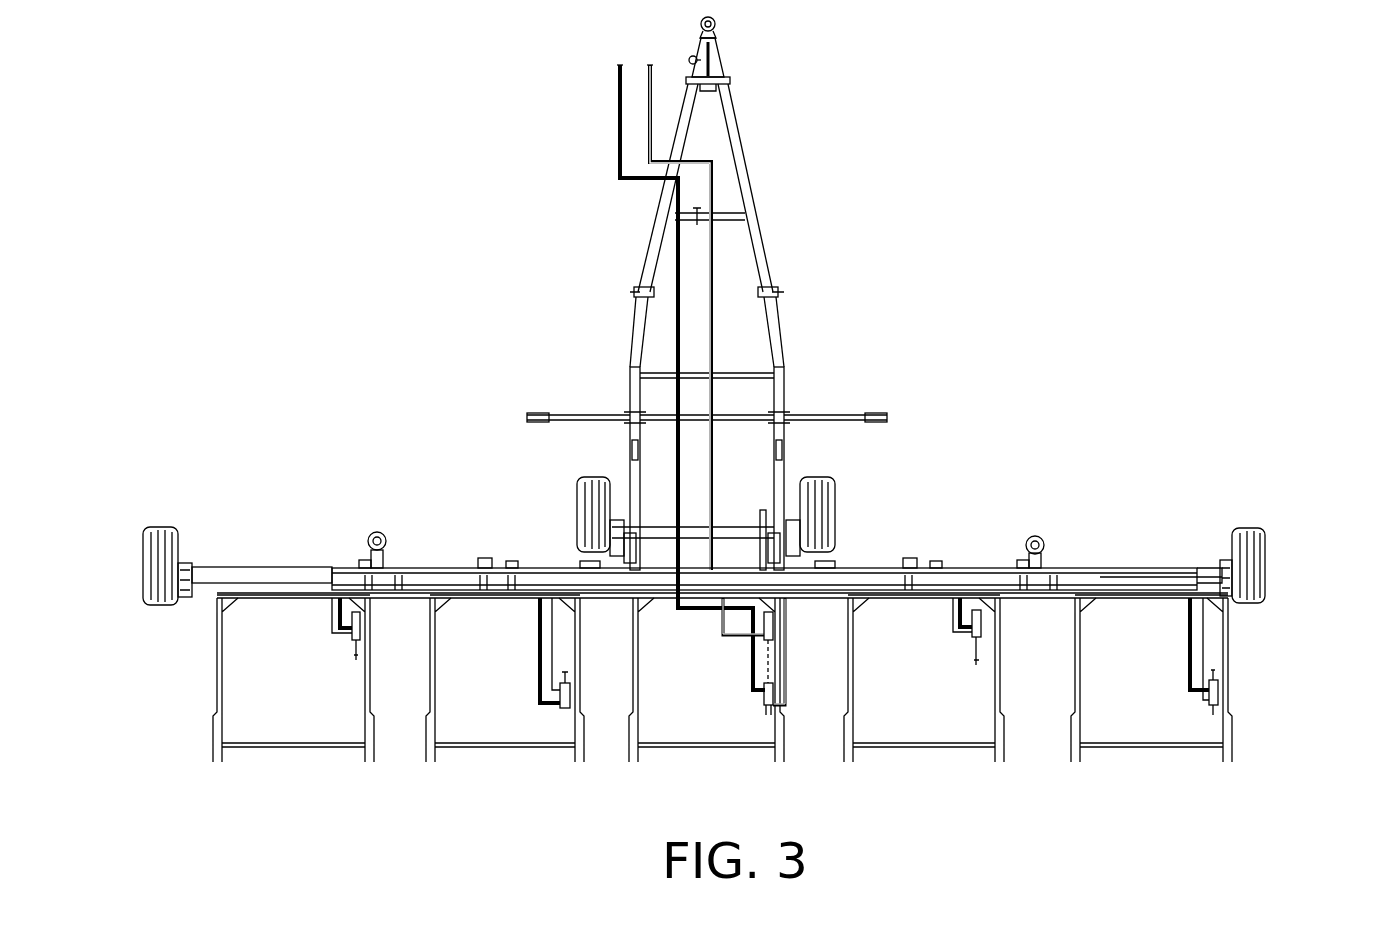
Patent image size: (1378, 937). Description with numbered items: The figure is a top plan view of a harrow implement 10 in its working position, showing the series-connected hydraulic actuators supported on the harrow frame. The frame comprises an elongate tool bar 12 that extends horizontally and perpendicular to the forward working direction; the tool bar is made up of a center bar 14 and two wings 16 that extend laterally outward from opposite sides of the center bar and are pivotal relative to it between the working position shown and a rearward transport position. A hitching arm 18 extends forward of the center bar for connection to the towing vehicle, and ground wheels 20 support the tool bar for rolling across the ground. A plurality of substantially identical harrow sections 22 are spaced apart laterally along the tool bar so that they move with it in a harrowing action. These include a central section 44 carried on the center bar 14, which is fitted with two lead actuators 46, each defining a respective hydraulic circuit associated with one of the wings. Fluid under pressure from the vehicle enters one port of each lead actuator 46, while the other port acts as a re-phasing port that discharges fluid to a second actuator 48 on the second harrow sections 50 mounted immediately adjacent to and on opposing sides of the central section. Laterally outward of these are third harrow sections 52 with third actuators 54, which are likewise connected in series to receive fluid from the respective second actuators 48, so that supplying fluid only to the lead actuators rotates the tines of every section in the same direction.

The harrow implement 10 is at (322, 208).
The tool bar 12 is at (978, 568).
The center bar 14 is at (735, 567).
The wings 16 is at (282, 565).
The hitching arm 18 is at (780, 330).
The ground wheels 20 is at (155, 553).
The harrow sections 22 is at (293, 745).
The central section 44 is at (715, 695).
The lead actuators 46 is at (773, 620).
The second actuator 48 is at (538, 705).
The second harrow sections 50 is at (520, 683).
The third harrow sections 52 is at (300, 690).
The third actuators 54 is at (340, 618).